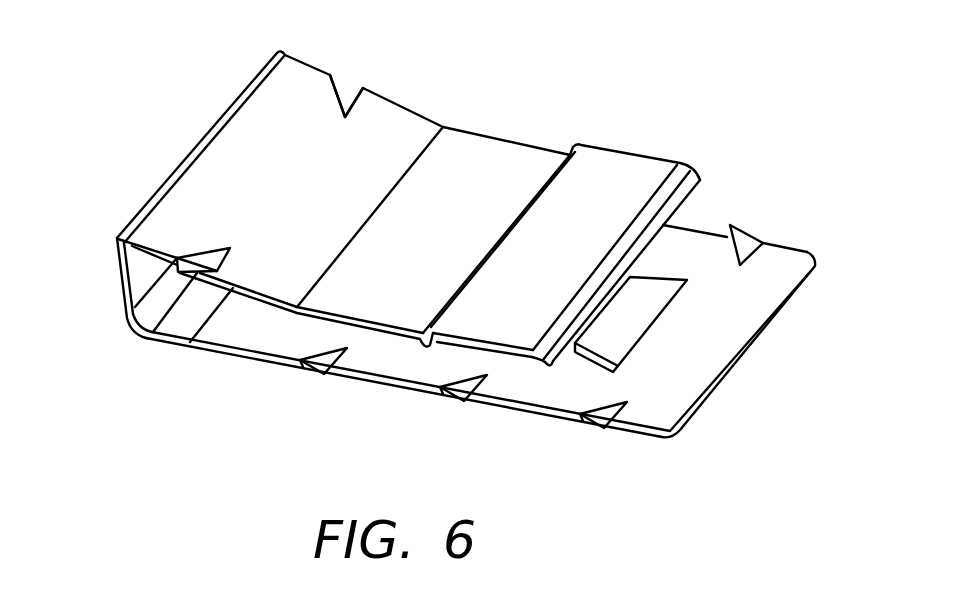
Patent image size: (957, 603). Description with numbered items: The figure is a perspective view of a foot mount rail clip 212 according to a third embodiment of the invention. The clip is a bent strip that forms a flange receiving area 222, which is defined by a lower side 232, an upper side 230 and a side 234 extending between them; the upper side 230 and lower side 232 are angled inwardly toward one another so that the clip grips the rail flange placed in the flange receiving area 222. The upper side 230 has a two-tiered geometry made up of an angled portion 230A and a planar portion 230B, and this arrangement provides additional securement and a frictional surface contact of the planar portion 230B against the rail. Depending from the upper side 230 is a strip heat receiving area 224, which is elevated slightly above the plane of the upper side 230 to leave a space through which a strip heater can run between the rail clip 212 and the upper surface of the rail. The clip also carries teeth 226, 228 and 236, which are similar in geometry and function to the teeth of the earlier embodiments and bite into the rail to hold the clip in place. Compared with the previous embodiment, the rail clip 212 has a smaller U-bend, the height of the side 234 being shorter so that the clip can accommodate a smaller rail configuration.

The foot mount rail clip 212 is at (500, 82).
The flange receiving area 222 is at (545, 383).
The strip heat receiving area 224 is at (630, 165).
The tooth 226 is at (347, 92).
The tooth 228 is at (594, 412).
The upper side 230 is at (319, 214).
The angled portion 230A is at (265, 108).
The planar portion 230B is at (482, 163).
The lower side 232 is at (283, 333).
The side 234 is at (118, 277).
The tooth 236 is at (647, 305).